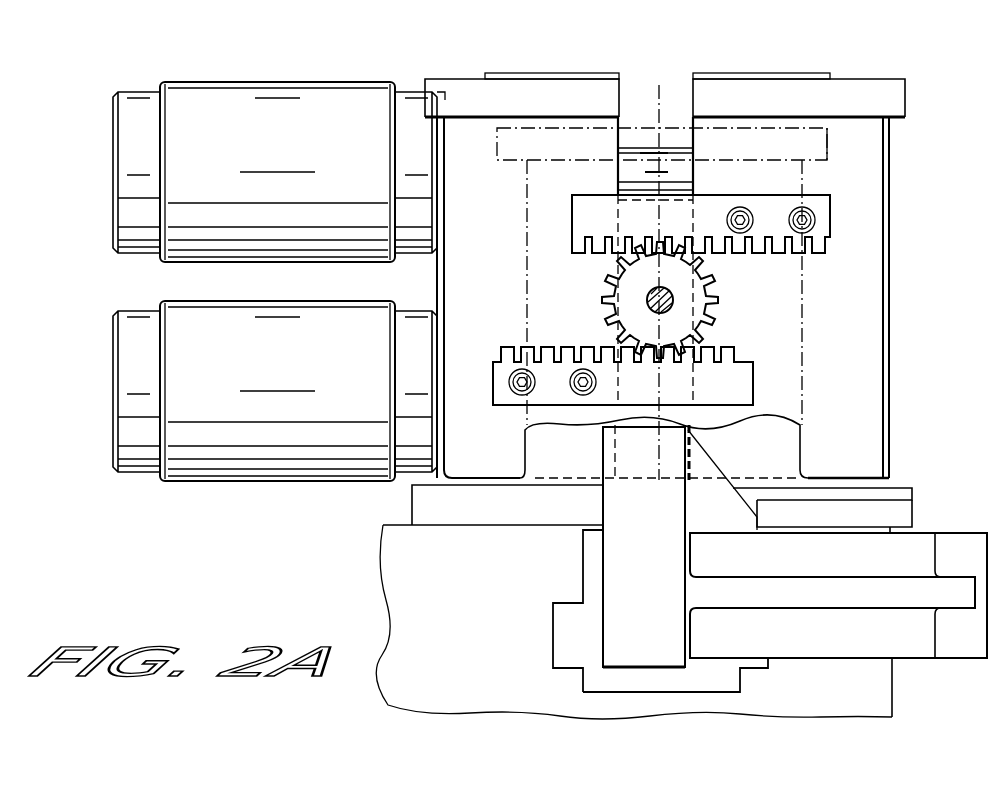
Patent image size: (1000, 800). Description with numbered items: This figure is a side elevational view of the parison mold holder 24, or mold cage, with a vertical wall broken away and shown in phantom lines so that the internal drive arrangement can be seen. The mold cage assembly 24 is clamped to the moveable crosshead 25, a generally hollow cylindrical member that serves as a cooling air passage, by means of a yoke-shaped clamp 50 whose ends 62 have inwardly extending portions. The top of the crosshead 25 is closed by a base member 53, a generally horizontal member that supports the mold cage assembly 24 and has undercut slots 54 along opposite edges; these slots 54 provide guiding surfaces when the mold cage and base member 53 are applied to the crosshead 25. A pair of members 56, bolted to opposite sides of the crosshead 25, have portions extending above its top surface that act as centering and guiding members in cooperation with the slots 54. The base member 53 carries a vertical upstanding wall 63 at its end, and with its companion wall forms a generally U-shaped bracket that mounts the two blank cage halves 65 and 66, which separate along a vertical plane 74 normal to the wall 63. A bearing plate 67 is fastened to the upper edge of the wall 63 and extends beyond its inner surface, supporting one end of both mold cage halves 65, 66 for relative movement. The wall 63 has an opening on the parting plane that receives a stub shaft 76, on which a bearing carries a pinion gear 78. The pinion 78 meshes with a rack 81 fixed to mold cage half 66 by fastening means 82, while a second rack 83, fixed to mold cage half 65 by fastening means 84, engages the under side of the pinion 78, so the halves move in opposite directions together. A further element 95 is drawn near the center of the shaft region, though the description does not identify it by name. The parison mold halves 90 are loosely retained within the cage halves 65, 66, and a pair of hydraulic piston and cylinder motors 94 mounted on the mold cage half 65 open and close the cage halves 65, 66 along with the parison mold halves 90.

The parison mold holder 24 is at (398, 57).
The hydraulic piston and cylinder motors 94 is at (140, 148).
The blank cage half 65 is at (467, 127).
The blank cage half 66 is at (858, 128).
The parison mold halves 90 is at (556, 73).
The vertical plane 74 is at (655, 92).
The shaft pin 95 is at (656, 152).
The bearing plate 67 is at (830, 147).
The rack 81 is at (820, 232).
The fastening means 82 is at (803, 212).
The pinion gear 78 is at (716, 290).
The stub shaft 76 is at (675, 302).
The second rack 83 is at (737, 375).
The fastening means 84 is at (583, 365).
The vertical upstanding wall 63 is at (803, 438).
The base member 53 is at (895, 496).
The undercut slots 54 is at (897, 517).
The ends of the yoke-shaped clamp 62 is at (620, 573).
The members 56 is at (590, 562).
The crosshead 25 is at (405, 573).
The yoke-shaped clamp 50 is at (952, 645).